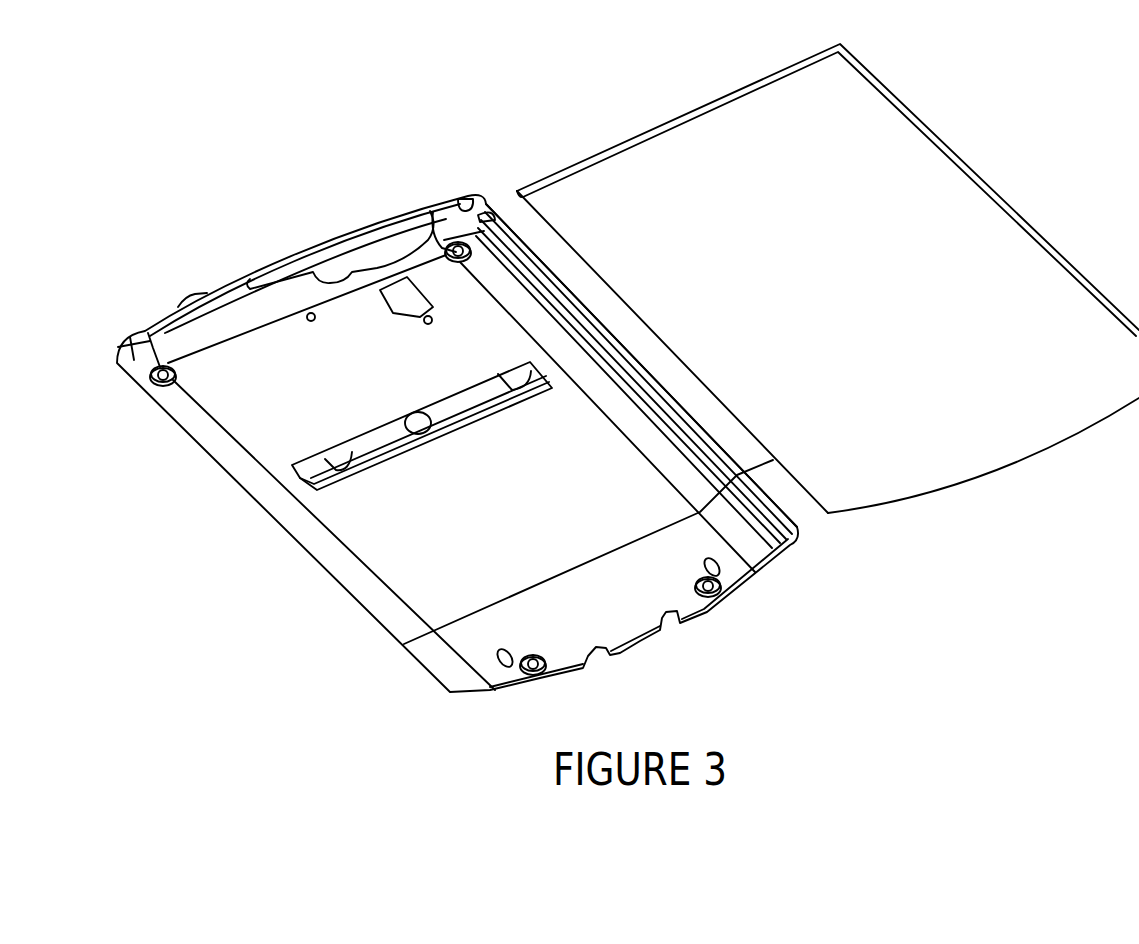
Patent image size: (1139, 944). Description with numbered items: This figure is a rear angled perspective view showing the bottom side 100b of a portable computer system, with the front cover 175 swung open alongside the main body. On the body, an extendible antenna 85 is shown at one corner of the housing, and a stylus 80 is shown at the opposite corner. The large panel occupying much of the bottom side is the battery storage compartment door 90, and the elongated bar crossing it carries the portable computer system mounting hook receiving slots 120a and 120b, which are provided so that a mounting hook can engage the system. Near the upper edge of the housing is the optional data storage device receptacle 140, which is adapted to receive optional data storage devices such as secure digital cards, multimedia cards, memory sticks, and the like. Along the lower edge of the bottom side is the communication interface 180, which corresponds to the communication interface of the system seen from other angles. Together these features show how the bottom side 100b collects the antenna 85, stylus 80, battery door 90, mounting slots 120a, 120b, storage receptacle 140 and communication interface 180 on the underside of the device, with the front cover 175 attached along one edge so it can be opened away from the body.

The bottom side 100b is at (147, 64).
The stylus 80 is at (123, 348).
The extendible antenna 85 is at (464, 203).
The battery storage compartment door 90 is at (359, 450).
The mounting hook receiving slot 120a is at (310, 460).
The mounting hook receiving slot 120b is at (528, 368).
The optional data storage device receptacle 140 is at (375, 266).
The front cover 175 is at (950, 183).
The communication interface 180 is at (627, 633).